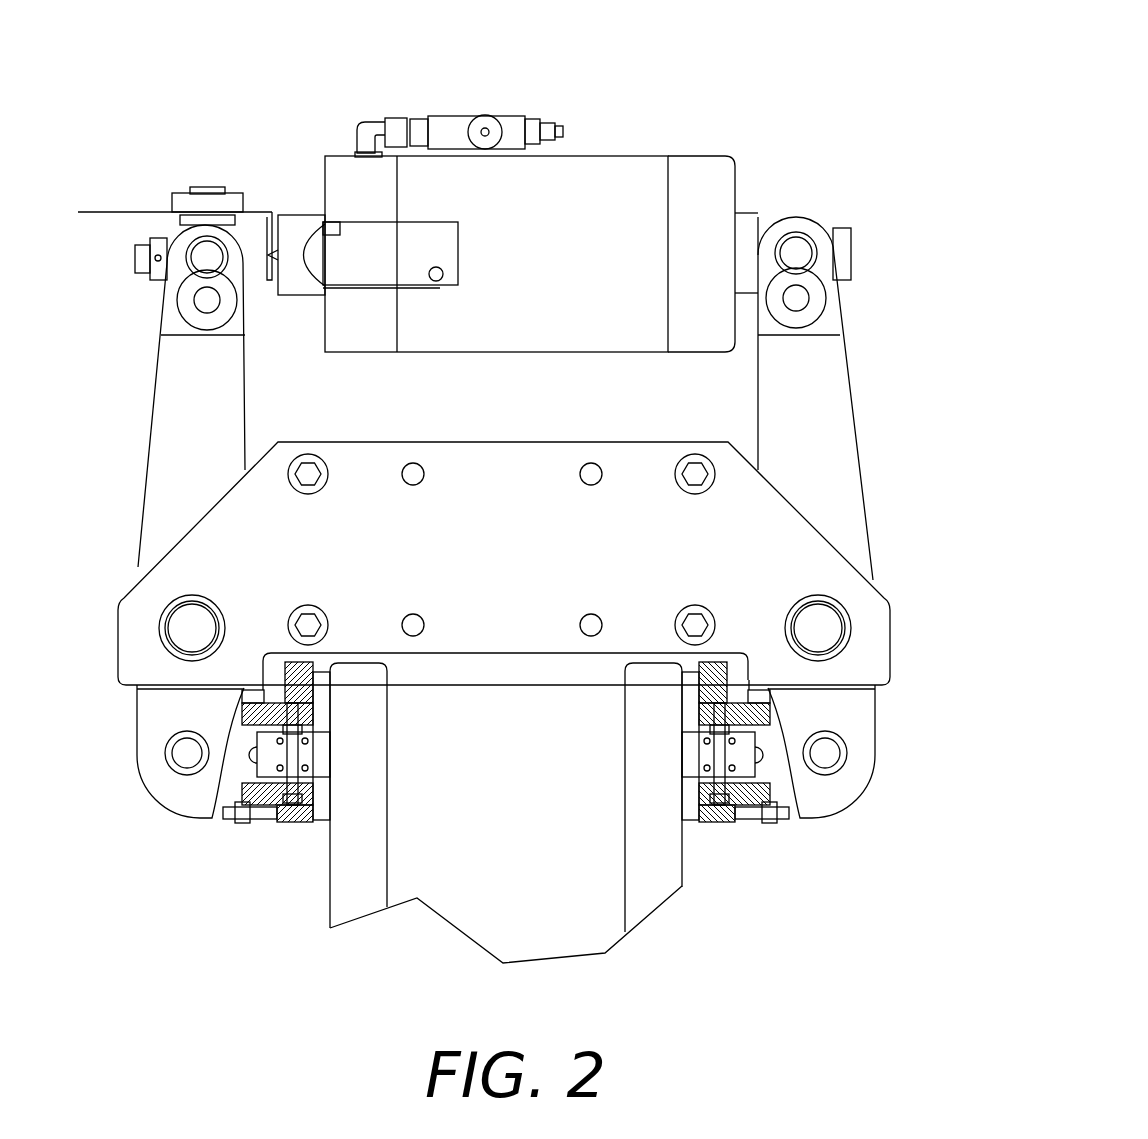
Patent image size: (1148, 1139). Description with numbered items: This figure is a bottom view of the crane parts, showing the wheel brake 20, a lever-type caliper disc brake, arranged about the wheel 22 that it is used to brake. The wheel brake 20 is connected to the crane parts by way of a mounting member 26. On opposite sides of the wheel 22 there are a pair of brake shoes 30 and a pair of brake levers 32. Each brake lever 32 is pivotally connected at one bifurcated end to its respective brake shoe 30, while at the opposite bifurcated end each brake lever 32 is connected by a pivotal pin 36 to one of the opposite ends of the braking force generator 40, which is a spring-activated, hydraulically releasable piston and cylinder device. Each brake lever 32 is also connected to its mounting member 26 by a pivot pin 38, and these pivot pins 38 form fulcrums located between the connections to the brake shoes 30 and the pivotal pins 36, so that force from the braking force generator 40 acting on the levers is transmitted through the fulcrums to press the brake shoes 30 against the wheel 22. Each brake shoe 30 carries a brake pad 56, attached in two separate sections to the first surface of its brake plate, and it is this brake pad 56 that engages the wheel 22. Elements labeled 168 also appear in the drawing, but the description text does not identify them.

The wheel brake 20 is at (755, 74).
The wheel 22 is at (490, 923).
The mounting member 26 is at (511, 442).
The brake shoe 30 is at (165, 808).
The brake lever 32 is at (156, 397).
The pivotal pin 36 is at (188, 245).
The pivot pin 38 is at (176, 606).
The braking force generator 40 is at (598, 158).
The brake pad 56 is at (320, 824).
The roller wheel 168 is at (343, 897).